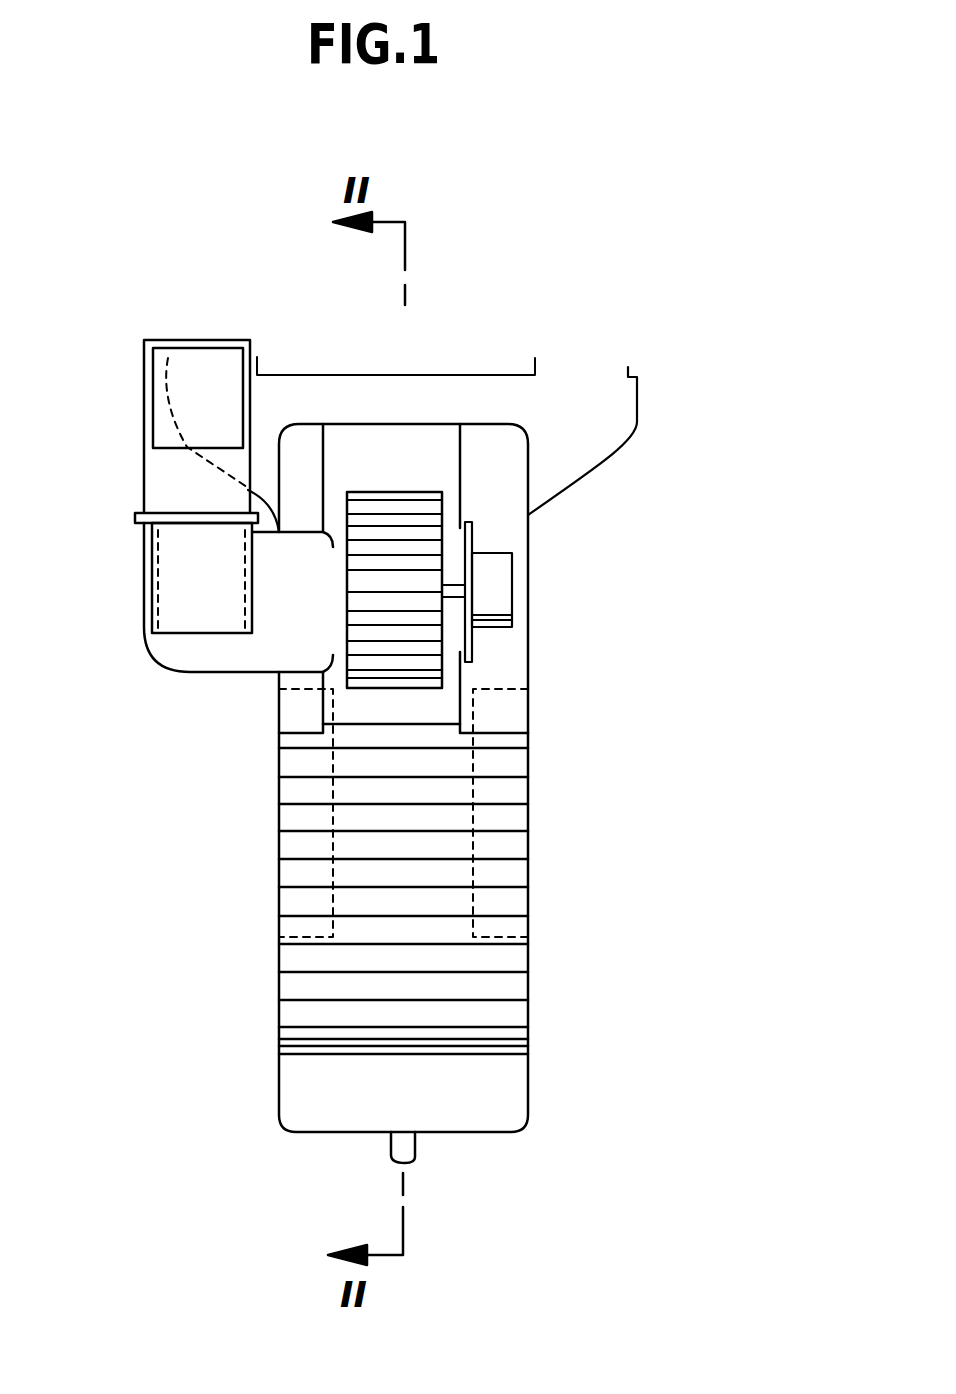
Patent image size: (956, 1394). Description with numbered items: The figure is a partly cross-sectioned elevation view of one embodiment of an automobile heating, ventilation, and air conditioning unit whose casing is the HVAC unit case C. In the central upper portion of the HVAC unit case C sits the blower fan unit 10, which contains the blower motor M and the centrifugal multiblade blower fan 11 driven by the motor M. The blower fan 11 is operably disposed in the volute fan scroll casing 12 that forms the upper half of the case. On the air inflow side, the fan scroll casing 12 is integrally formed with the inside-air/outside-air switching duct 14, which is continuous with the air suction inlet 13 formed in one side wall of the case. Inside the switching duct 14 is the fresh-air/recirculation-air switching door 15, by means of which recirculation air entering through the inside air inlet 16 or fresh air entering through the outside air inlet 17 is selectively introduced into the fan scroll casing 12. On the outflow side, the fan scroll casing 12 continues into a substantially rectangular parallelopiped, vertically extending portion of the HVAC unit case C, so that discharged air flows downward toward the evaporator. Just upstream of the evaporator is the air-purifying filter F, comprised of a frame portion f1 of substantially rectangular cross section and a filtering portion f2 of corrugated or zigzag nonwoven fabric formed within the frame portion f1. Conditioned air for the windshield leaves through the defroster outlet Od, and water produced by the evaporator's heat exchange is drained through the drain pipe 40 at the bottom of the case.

The blower fan unit 10 is at (445, 405).
The blower fan 11 is at (402, 492).
The fan scroll casing 12 is at (340, 424).
The air suction inlet 13 is at (302, 670).
The inside-air/outside-air switching duct 14 is at (162, 660).
The fresh-air/recirculation-air switching door 15 is at (187, 598).
The inside air inlet 16 is at (150, 569).
The outside air inlet 17 is at (155, 430).
The drain pipe 40 is at (403, 1142).
The defroster outlet Od is at (585, 373).
The blower motor M is at (497, 597).
The HVAC unit case C is at (540, 832).
The air-purifying filter F is at (344, 995).
The frame portion f1 is at (320, 1032).
The filtering portion f2 is at (365, 905).